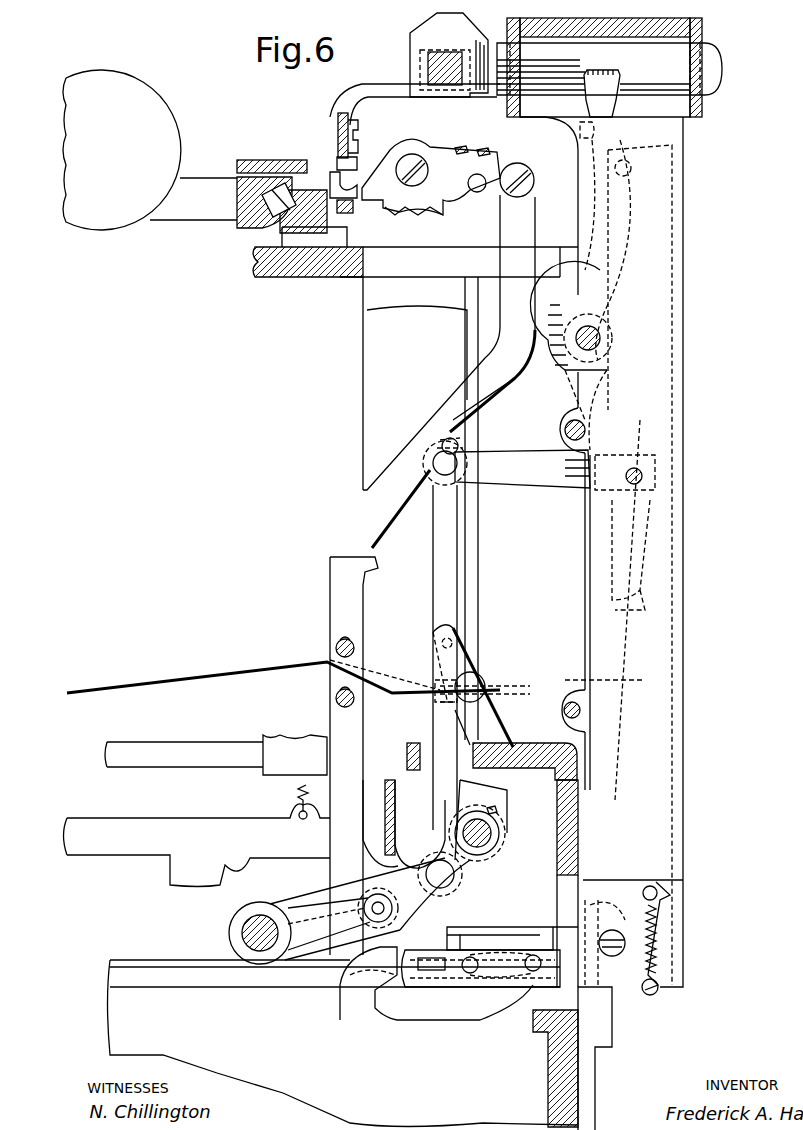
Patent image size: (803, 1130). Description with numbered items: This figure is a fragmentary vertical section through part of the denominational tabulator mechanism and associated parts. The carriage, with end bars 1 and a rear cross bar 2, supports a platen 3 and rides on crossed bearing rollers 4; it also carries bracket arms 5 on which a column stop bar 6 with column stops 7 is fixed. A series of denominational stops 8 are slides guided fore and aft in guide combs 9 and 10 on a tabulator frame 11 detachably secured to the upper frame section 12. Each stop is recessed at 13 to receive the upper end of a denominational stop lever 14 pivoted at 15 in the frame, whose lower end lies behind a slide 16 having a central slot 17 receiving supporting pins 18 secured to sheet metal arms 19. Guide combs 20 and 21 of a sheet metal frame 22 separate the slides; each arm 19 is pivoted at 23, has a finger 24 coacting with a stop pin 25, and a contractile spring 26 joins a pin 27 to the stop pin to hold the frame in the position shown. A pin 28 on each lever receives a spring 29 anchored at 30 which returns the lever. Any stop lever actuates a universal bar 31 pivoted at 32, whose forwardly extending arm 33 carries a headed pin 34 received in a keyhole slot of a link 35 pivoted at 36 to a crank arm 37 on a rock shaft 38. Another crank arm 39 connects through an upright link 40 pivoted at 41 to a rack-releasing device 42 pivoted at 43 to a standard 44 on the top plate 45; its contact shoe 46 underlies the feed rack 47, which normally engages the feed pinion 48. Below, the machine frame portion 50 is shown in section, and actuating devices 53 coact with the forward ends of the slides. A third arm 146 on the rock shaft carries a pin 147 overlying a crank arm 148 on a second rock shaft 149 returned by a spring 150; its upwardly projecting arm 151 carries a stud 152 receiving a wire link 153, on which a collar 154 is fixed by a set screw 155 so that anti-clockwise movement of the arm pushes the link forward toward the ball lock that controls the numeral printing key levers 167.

The end bars 1 is at (203, 188).
The rear cross bar 2 is at (248, 200).
The platen 3 is at (122, 150).
The crossed bearing rollers 4 is at (272, 215).
The bracket arms 5 is at (366, 87).
The column stop bar 6 is at (445, 55).
The column stops 7 is at (420, 38).
The denominational stops 8 is at (609, 69).
The guide comb 9 is at (700, 30).
The guide comb 10 is at (510, 106).
The tabulator frame 11 is at (685, 248).
The upper frame section 12 is at (213, 748).
The recess 13 is at (615, 72).
The denominational stop lever 14 is at (618, 88).
The pivot 15 is at (586, 330).
The slide 16 is at (415, 985).
The central slot 17 is at (430, 975).
The supporting pins 18 is at (470, 975).
The sheet metal arms 19 is at (510, 940).
The guide comb 20 is at (447, 937).
The guide comb 21 is at (562, 932).
The sheet metal frame 22 is at (492, 935).
The pivot 23 is at (610, 942).
The finger 24 is at (670, 900).
The stop pin 25 is at (652, 885).
The contractile spring 26 is at (660, 937).
The pin 27 is at (658, 990).
The laterally projecting pin 28 is at (633, 168).
The spring 29 is at (617, 232).
The anchor 30 is at (565, 425).
The universal bar 31 is at (635, 585).
The pivot 32 is at (626, 477).
The forwardly extending arm 33 is at (522, 469).
The headed pin 34 is at (433, 466).
The link 35 is at (440, 571).
The pivot 36 is at (425, 870).
The crank arm 37 is at (392, 910).
The rock shaft 38 is at (245, 938).
The crank arm 39 is at (293, 918).
The upright link 40 is at (387, 756).
The pivot 41 is at (522, 175).
The rack-releasing device 42 is at (458, 147).
The pivot 43 is at (411, 155).
The standard 44 is at (428, 215).
The top plate 45 is at (358, 260).
The contact shoe 46 is at (352, 185).
The feed rack 47 is at (350, 120).
The feed pinion 48 is at (348, 212).
The base 50 is at (343, 1043).
The actuating devices 53 is at (436, 983).
The third arm 146 is at (360, 900).
The laterally projecting pin 147 is at (362, 912).
The crank arm 148 is at (372, 930).
The rock shaft 149 is at (500, 840).
The spring 150 is at (470, 800).
The upwardly projecting arm 151 is at (497, 713).
The stud 152 is at (478, 680).
The wire link 153 is at (208, 683).
The collar 154 is at (437, 685).
The set screw 155 is at (445, 705).
The numeral printing key levers 167 is at (197, 836).